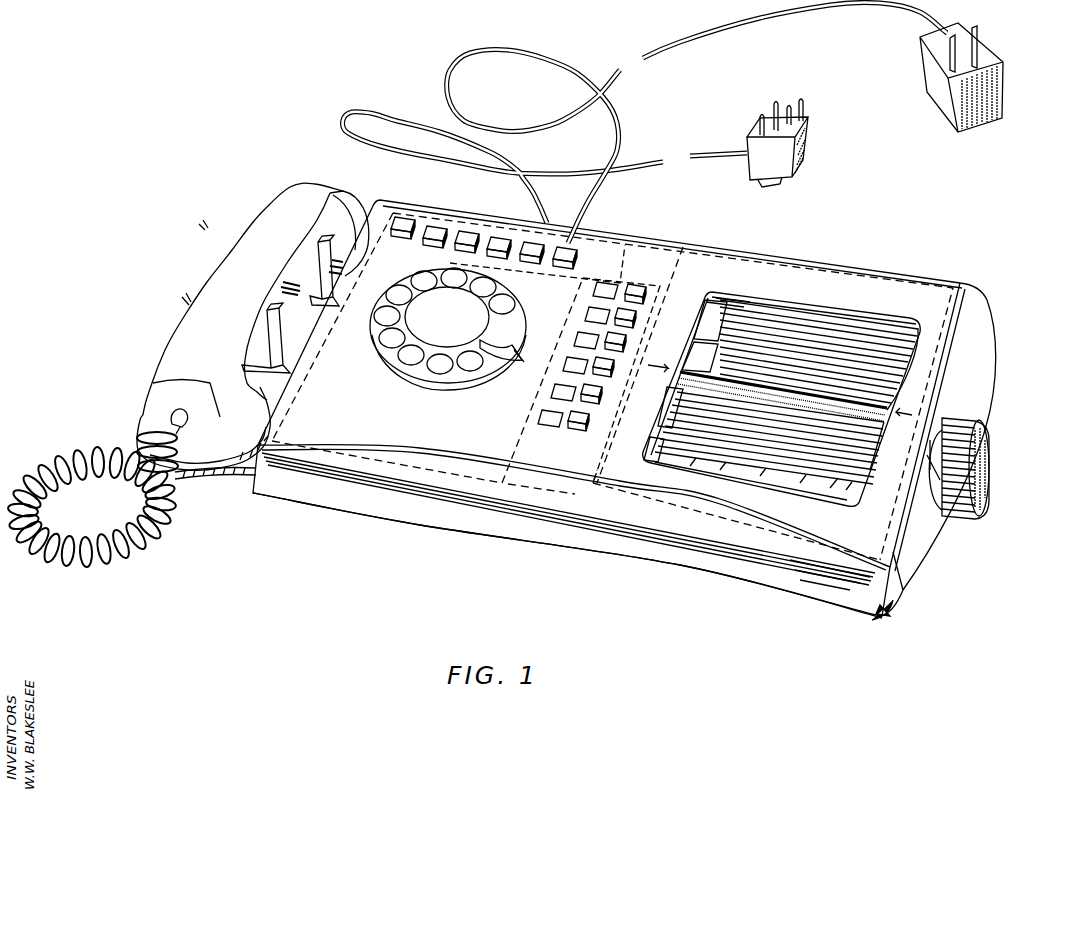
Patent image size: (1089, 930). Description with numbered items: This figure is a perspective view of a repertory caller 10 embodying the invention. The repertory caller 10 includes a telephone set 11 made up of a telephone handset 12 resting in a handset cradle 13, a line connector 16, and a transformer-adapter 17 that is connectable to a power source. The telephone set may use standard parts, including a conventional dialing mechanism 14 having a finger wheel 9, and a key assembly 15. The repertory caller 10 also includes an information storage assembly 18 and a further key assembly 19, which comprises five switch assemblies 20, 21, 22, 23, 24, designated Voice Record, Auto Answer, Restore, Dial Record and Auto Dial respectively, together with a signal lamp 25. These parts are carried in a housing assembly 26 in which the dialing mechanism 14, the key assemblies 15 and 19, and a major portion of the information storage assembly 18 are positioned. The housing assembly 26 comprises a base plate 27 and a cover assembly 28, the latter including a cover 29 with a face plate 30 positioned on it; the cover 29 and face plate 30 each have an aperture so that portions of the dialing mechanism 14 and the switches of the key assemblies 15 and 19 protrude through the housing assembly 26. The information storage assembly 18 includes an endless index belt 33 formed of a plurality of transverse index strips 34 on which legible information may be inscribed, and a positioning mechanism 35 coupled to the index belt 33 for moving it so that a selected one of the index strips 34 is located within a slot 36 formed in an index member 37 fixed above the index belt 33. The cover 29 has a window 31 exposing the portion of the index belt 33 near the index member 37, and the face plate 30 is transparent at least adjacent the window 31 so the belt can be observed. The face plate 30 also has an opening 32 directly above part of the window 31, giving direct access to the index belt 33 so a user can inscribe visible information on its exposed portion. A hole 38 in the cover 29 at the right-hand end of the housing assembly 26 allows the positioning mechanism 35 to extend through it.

The repertory caller 10 is at (300, 299).
The telephone set 11 is at (407, 460).
The telephone handset 12 is at (293, 192).
The handset cradle 13 is at (318, 272).
The dialing mechanism 14 is at (397, 363).
The key assembly 15 is at (537, 488).
The line connector 16 is at (806, 148).
The transformer-adapter 17 is at (1005, 96).
The information storage assembly 18 is at (691, 263).
The key assembly 19 is at (612, 255).
The switch assembly 20 is at (403, 217).
The switch assembly 21 is at (435, 226).
The switch assembly 22 is at (468, 231).
The switch assembly 23 is at (500, 237).
The switch assembly 24 is at (568, 248).
The signal lamp 25 is at (540, 243).
The housing assembly 26 is at (1011, 327).
The base plate 27 is at (775, 603).
The cover assembly 28 is at (812, 545).
The cover 29 is at (893, 552).
The face plate 30 is at (815, 390).
The window 31 is at (757, 297).
The opening 32 is at (862, 455).
The index belt 33 is at (847, 327).
The index strips 34 is at (732, 332).
The positioning mechanism 35 is at (982, 440).
The slot 36 is at (905, 395).
The index member 37 is at (670, 388).
The hole 38 is at (940, 430).
The finger wheel 9 is at (441, 335).